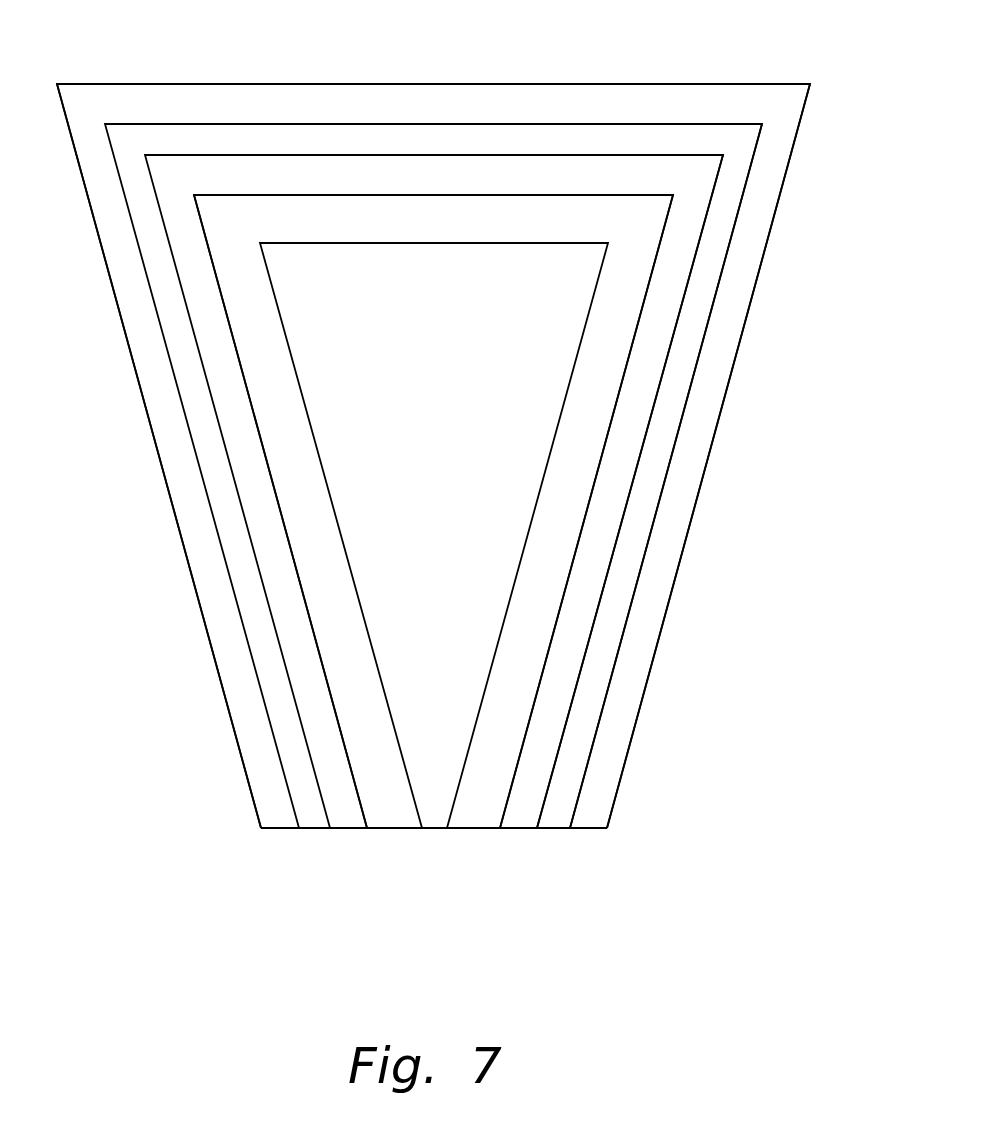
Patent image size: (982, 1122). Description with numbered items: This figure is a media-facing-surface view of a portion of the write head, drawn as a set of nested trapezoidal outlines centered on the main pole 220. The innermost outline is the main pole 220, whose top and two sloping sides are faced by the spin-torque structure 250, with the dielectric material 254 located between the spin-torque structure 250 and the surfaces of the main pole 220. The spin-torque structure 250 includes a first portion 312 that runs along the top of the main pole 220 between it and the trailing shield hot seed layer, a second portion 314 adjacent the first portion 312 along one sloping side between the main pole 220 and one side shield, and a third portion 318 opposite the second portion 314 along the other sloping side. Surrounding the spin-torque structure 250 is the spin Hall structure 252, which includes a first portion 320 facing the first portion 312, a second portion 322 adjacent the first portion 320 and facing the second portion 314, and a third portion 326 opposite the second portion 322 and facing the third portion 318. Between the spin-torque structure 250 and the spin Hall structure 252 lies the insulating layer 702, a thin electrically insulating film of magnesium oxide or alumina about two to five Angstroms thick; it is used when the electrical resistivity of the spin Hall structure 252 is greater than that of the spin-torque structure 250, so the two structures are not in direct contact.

The first portion of the spin Hall structure 320 is at (305, 98).
The second portion of the spin Hall structure 322 is at (205, 543).
The third portion of the spin Hall structure 326 is at (733, 341).
The insulating layer 702 is at (408, 140).
The first portion of the spin-torque structure 312 is at (501, 173).
The third portion of the spin-torque structure 318 is at (622, 462).
The dielectric material 254 is at (580, 220).
The second portion of the spin-torque structure 314 is at (282, 597).
The spin Hall structure 252 is at (663, 543).
The spin-torque structure 250 is at (585, 597).
The main pole 220 is at (431, 803).